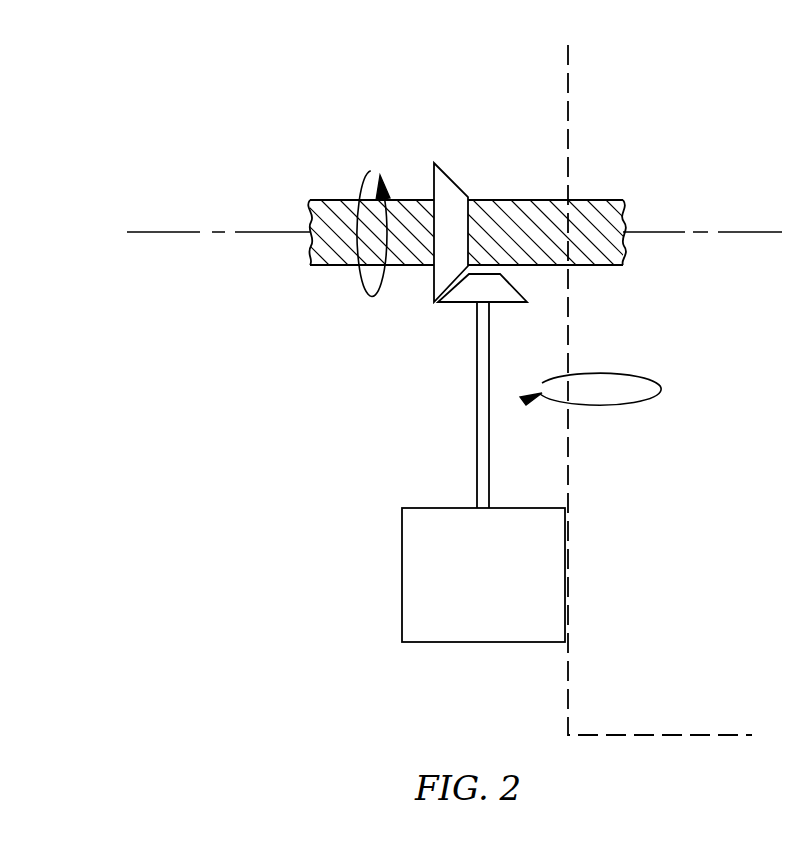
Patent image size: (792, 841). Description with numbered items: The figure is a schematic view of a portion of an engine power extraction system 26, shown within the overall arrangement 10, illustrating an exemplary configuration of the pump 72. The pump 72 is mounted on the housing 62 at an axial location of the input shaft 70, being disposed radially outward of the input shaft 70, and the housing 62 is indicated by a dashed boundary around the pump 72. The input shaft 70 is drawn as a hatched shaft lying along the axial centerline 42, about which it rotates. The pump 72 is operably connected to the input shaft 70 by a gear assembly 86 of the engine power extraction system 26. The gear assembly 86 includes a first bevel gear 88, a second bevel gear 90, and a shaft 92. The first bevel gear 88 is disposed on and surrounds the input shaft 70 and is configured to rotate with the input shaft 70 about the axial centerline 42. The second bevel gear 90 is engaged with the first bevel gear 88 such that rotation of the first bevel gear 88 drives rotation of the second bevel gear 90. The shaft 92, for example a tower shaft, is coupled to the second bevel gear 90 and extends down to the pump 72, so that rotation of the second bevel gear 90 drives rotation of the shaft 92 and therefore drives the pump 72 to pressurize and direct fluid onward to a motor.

The system 10 is at (672, 130).
The engine power extraction system 26 is at (230, 457).
The axial centerline 42 is at (760, 233).
The housing 62 is at (572, 698).
The input shaft 70 is at (517, 200).
The pump 72 is at (402, 574).
The gear assembly 86 is at (390, 331).
The first bevel gear 88 is at (453, 182).
The second bevel gear 90 is at (517, 302).
The shaft 92 is at (482, 453).